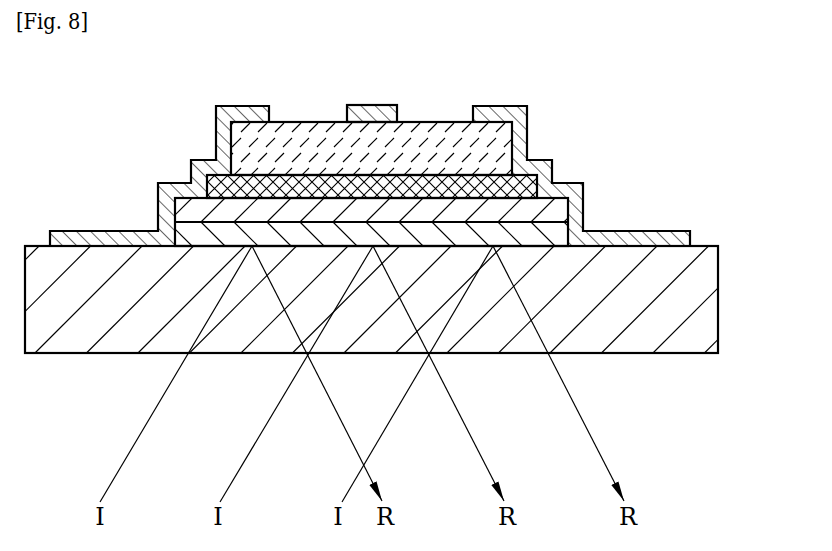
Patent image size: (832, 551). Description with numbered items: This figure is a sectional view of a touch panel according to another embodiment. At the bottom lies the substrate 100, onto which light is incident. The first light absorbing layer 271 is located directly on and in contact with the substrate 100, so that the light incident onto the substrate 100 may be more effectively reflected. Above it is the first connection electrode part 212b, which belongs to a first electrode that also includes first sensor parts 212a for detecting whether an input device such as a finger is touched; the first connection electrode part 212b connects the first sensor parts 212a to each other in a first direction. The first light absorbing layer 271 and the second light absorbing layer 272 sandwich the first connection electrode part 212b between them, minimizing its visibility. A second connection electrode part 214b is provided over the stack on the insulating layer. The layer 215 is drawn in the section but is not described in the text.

The substrate 100 is at (713, 300).
The first sensor part 212a is at (583, 205).
The first connection electrode part 212b is at (553, 187).
The second connection electrode part 214b is at (368, 105).
The insulating layer 215 is at (300, 121).
The first light absorbing layer 271 is at (195, 228).
The second light absorbing layer 272 is at (254, 177).